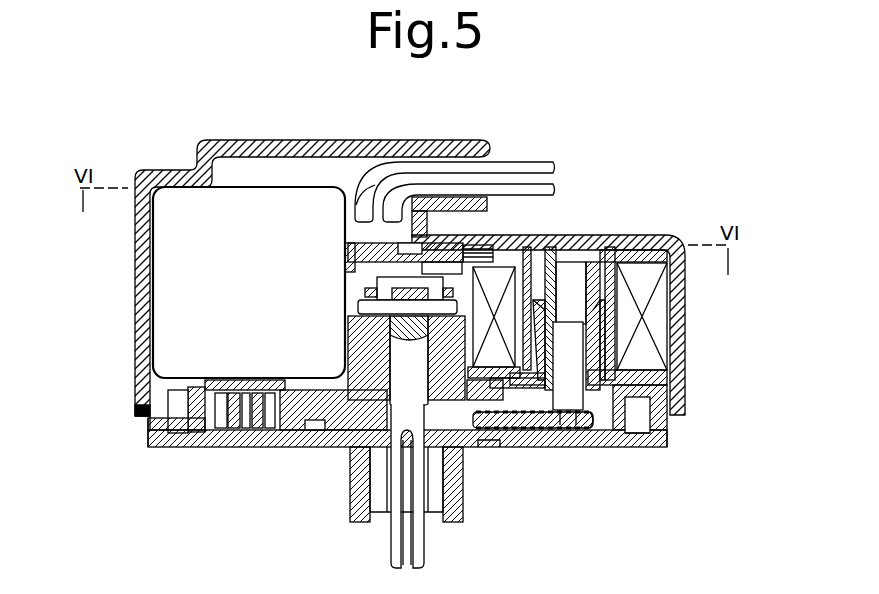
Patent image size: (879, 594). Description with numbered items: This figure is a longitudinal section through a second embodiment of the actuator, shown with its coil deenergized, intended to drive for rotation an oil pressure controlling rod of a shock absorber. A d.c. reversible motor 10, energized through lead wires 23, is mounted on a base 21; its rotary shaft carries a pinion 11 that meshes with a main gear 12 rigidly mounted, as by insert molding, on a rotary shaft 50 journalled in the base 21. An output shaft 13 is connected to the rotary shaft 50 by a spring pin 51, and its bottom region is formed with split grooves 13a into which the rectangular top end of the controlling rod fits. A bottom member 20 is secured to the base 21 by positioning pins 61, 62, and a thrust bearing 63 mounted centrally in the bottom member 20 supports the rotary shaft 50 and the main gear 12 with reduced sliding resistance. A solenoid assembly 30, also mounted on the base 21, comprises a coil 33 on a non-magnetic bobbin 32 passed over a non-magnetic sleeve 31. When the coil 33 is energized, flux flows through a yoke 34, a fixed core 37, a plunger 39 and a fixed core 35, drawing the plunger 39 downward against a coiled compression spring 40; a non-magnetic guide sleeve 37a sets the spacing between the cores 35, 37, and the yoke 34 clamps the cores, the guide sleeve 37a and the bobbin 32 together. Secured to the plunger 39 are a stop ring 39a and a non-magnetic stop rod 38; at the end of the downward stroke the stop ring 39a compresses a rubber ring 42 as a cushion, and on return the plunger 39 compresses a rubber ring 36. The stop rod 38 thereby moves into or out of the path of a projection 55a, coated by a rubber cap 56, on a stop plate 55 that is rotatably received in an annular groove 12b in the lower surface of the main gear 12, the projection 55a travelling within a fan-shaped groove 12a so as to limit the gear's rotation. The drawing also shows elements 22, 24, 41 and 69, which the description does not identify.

The d.c. reversible motor 10 is at (178, 203).
The pinion 11 is at (210, 447).
The main gear 12 is at (258, 447).
The fan-shaped groove 12a is at (497, 447).
The annular groove 12b is at (250, 445).
The output shaft 13 is at (396, 497).
The split grooves 13a is at (405, 545).
The bottom member 20 is at (140, 410).
The base 21 is at (140, 378).
The cover 22 is at (205, 150).
The lead wires 23 is at (423, 186).
The lead wire 24 is at (427, 166).
The solenoid assembly 30 is at (688, 188).
The sleeve 31 is at (565, 325).
The bobbin 32 is at (640, 366).
The coil 33 is at (683, 238).
The yoke 34 is at (630, 252).
The fixed core 35 is at (655, 413).
The rubber ring 36 is at (640, 305).
The fixed core 37 is at (590, 303).
The non-magnetic guide sleeve 37a is at (595, 333).
The stop rod 38 is at (578, 447).
The plunger 39 is at (512, 236).
The stop ring 39a is at (572, 250).
The coiled compression spring 40 is at (550, 447).
The sleeve 41 is at (620, 245).
The rubber ring 42 is at (590, 240).
The rotary shaft 50 is at (330, 447).
The spring pin 51 is at (366, 308).
The stop plate 55 is at (487, 447).
The projection 55a is at (592, 447).
The rubber cap 56 is at (505, 447).
The positioning pin 61 is at (152, 438).
The positioning pin 62 is at (656, 441).
The thrust bearing 63 is at (278, 447).
The bent portion of lead 69 is at (378, 176).